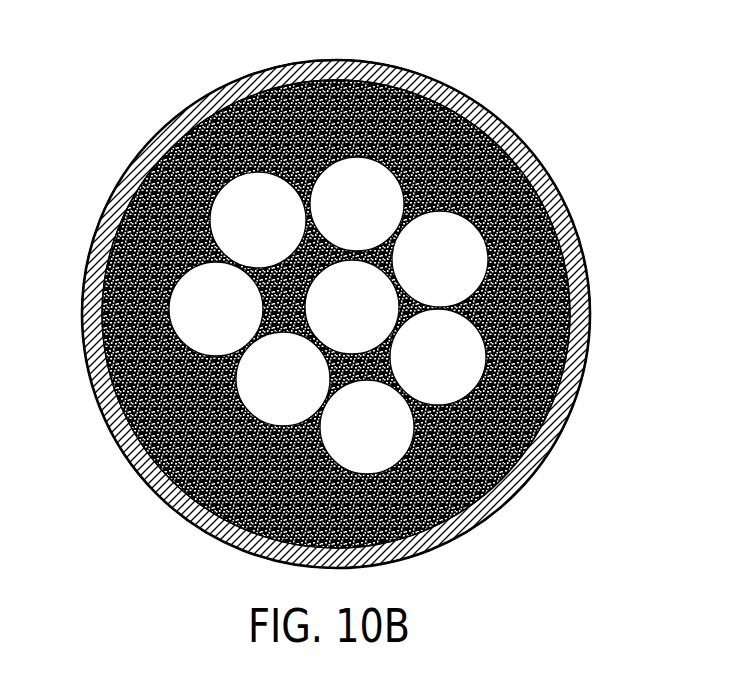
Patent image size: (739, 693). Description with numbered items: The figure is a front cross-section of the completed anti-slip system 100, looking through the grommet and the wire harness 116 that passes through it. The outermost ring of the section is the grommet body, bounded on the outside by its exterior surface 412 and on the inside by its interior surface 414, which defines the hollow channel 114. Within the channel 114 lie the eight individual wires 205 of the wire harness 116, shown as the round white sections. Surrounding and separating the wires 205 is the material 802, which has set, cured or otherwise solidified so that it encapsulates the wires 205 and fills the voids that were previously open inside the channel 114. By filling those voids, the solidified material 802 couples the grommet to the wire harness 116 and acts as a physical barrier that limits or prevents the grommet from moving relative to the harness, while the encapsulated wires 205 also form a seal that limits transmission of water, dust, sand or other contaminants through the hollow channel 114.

The anti-slip system 100 is at (134, 72).
The wires 205 is at (233, 100).
The interior surface 414 is at (412, 92).
The hollow channel 114 is at (487, 128).
The wire harness 116 is at (570, 172).
The exterior surface 412 is at (577, 222).
The material 802 is at (235, 532).